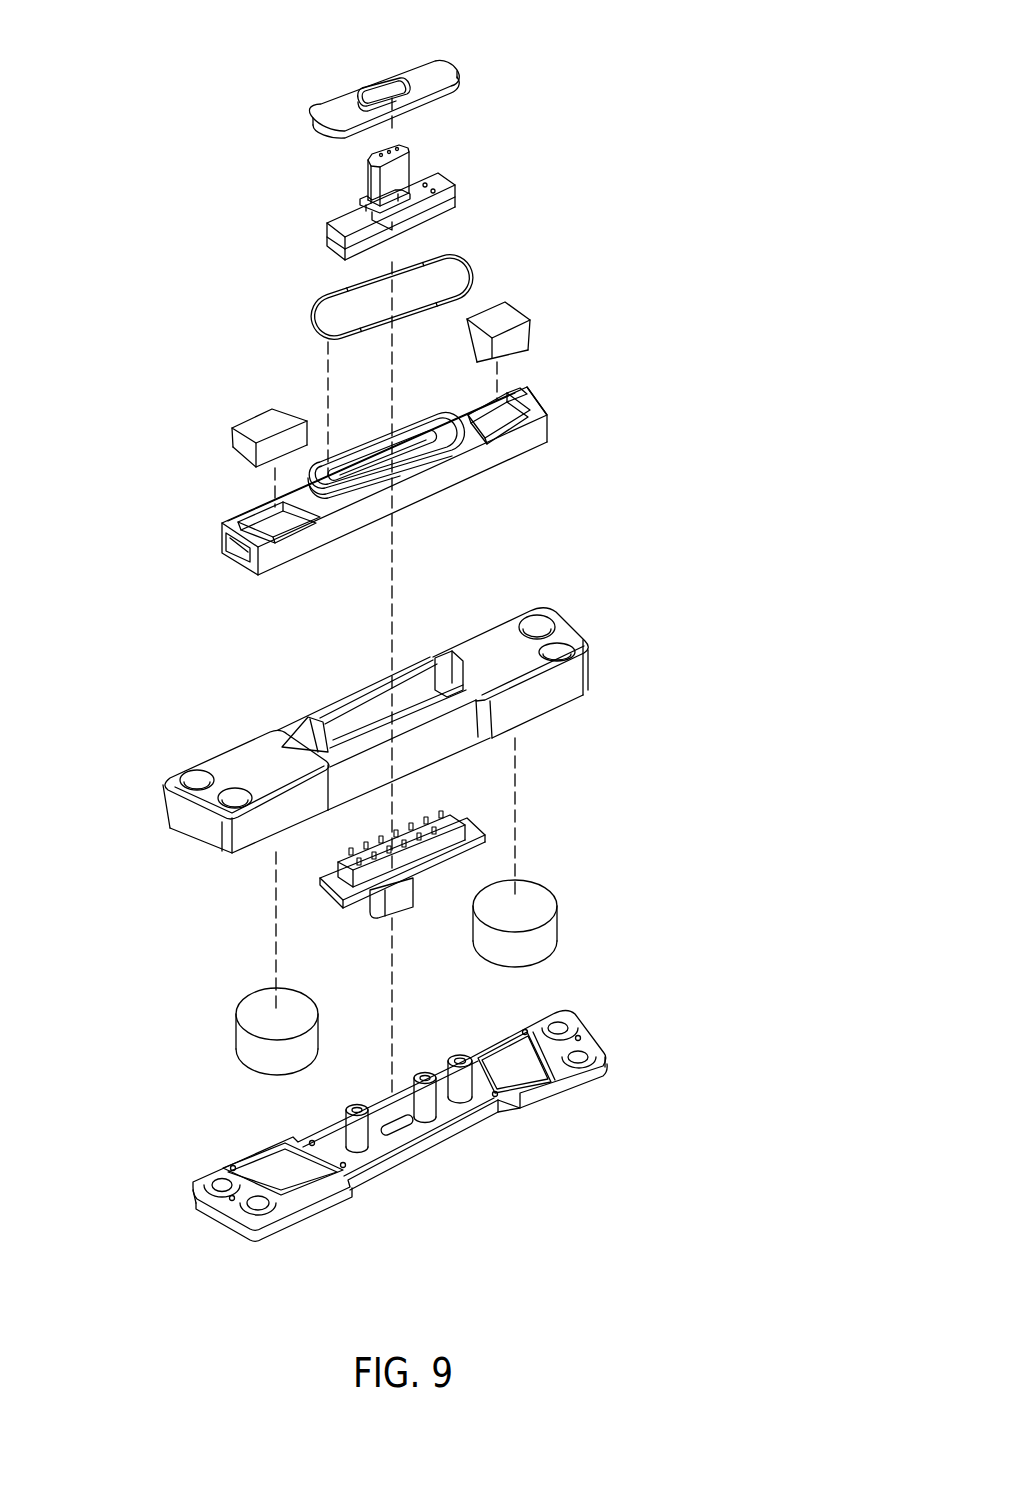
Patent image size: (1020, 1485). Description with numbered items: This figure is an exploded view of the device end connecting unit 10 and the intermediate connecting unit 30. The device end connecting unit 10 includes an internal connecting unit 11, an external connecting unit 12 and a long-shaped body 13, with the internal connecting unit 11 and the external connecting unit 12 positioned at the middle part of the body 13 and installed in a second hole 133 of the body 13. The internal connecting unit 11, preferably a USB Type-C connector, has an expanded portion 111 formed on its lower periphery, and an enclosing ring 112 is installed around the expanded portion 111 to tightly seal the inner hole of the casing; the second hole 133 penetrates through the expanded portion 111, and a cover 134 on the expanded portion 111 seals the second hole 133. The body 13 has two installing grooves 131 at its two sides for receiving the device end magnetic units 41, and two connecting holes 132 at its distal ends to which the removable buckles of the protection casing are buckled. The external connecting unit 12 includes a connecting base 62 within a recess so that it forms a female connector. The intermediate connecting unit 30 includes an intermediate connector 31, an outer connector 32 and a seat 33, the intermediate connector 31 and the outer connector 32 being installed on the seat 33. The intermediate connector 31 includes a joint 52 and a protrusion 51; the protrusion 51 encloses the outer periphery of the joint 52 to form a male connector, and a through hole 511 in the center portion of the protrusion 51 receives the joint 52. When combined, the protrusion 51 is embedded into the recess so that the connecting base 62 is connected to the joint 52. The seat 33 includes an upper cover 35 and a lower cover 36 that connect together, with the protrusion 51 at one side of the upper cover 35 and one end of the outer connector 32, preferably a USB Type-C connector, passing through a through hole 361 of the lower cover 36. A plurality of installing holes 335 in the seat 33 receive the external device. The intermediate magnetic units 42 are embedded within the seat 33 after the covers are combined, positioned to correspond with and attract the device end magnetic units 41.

The device end connecting unit 10 is at (359, 483).
The internal connecting unit 11 is at (407, 163).
The external connecting unit 12 is at (428, 207).
The body 13 is at (392, 483).
The connecting base 62 is at (437, 216).
The expanded portion 111 is at (422, 467).
The enclosing ring 112 is at (315, 312).
The installing groove 131 is at (258, 522).
The connecting hole 132 is at (243, 555).
The second hole 133 is at (402, 445).
The cover 134 is at (438, 65).
The intermediate connecting unit 30 is at (378, 710).
The intermediate connector 31 is at (402, 863).
The outer connector 32 is at (407, 912).
The seat 33 is at (378, 710).
The upper cover 35 is at (557, 715).
The installing hole 335 is at (190, 777).
The lower cover 36 is at (416, 1106).
The through hole 361 is at (407, 1130).
The device end magnetic unit 41 is at (257, 423).
The intermediate magnetic unit 42 is at (557, 918).
The protrusion 51 is at (302, 730).
The through hole 511 is at (353, 713).
The joint 52 is at (418, 823).